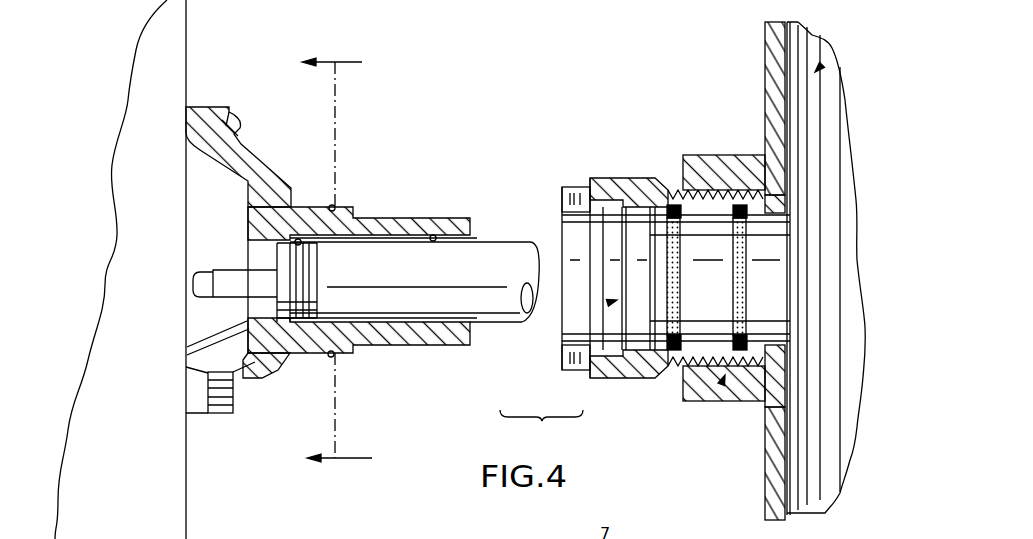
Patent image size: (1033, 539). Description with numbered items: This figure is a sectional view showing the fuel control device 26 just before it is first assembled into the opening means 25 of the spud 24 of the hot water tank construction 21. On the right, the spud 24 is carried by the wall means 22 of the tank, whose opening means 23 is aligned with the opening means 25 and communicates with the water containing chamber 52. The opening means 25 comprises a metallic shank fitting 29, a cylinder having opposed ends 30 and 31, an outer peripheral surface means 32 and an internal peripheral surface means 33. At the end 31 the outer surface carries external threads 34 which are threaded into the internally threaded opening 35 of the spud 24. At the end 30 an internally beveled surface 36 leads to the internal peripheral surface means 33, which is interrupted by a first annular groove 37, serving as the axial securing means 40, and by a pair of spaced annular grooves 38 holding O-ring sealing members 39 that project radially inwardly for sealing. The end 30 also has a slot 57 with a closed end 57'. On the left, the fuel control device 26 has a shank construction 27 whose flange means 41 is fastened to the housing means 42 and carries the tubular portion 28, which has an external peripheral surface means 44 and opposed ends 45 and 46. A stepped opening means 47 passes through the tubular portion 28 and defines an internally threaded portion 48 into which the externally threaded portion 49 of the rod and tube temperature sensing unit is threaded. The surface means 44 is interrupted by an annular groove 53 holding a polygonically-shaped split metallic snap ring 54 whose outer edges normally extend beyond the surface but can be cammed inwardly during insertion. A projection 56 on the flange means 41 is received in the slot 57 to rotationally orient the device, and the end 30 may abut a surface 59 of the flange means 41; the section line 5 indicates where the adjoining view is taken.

The section line 5- 5 is at (337, 261).
The hot water tank construction 21 is at (763, 57).
The wall means 22 is at (773, 488).
The opening means 23 is at (780, 366).
The spud 24 is at (713, 155).
The opening means 25 is at (722, 382).
The fuel control device 26 is at (149, 43).
The shank construction 27 is at (262, 168).
The tubular portion 28 is at (406, 218).
The shank fitting 29 is at (638, 178).
The end 30 is at (562, 202).
The end 31 is at (786, 208).
The outer peripheral surface means 32 is at (670, 188).
The internal peripheral surface means 33 is at (631, 354).
The external threads 34 is at (734, 190).
The internally threaded opening 35 is at (758, 358).
The internally beveled surface 36 is at (567, 342).
The first annular groove 37 is at (622, 205).
The annular grooves 38 is at (672, 362).
The O-ring sealing members 39 is at (733, 273).
The axial securing means 40 is at (610, 302).
The flange means 41 is at (244, 140).
The housing means 42 is at (187, 468).
The external peripheral surface means 44 is at (374, 218).
The end 45 is at (474, 218).
The end 46 is at (257, 375).
The stepped opening means 47 is at (444, 235).
The internally threaded portion 48 is at (301, 237).
The externally threaded portion 49 is at (300, 354).
The water containing chamber 52 is at (818, 69).
The annular groove 53 is at (338, 357).
The split metallic snap ring 54 is at (334, 205).
The projection 56 is at (287, 206).
The slot 57 is at (550, 258).
The closed end 57' is at (548, 281).
The surface 59 is at (277, 362).